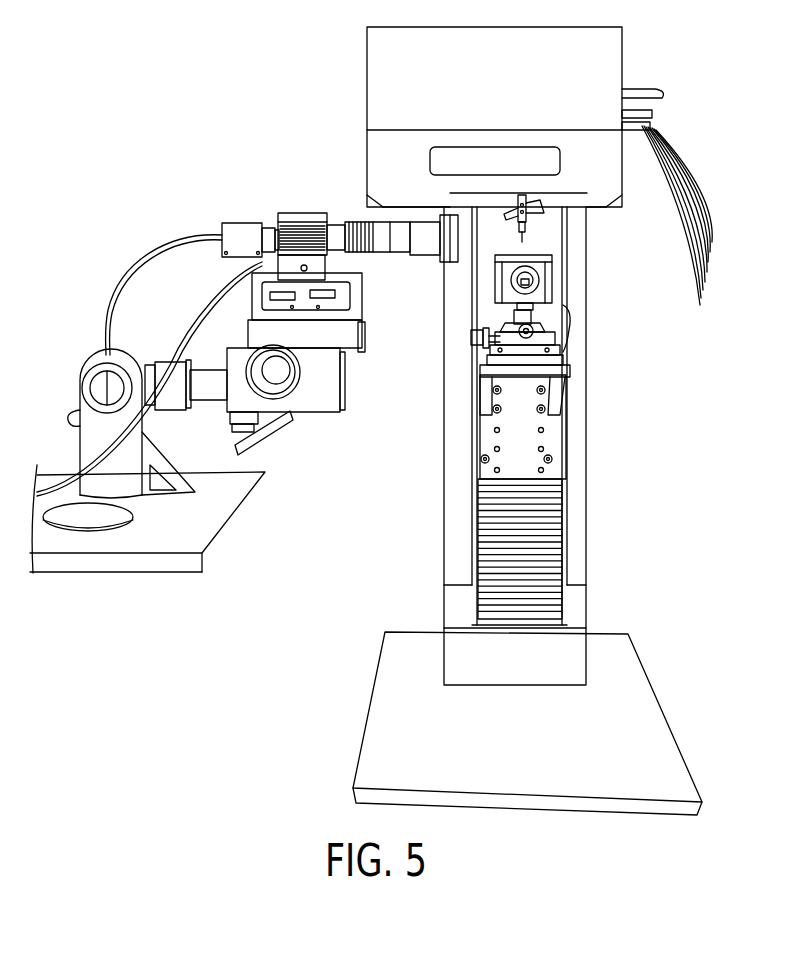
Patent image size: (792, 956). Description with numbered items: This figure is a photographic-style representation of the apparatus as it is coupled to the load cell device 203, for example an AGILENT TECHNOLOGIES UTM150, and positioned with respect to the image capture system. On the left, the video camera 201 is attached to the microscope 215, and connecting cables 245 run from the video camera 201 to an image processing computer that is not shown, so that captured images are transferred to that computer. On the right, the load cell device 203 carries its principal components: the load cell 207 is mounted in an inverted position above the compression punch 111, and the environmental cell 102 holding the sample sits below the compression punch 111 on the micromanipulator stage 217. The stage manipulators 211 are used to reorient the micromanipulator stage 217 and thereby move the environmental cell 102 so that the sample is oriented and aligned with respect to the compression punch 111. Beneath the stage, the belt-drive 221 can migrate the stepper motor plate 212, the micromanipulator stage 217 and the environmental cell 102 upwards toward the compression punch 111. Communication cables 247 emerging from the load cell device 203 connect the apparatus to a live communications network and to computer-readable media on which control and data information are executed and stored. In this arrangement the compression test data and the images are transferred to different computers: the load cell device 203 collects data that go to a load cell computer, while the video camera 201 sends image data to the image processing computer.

The environmental cell 102 is at (493, 287).
The compression punch 111 is at (521, 231).
The video camera 201 is at (245, 225).
The load cell device 203 is at (610, 55).
The load cell 207 is at (527, 198).
The stage manipulators 211 is at (524, 332).
The stepper motor plate 212 is at (563, 370).
The microscope 215 is at (360, 222).
The micromanipulator stage 217 is at (568, 328).
The belt-drive 221 is at (520, 518).
The connecting cables 245 is at (230, 422).
The communication cables 247 is at (655, 130).